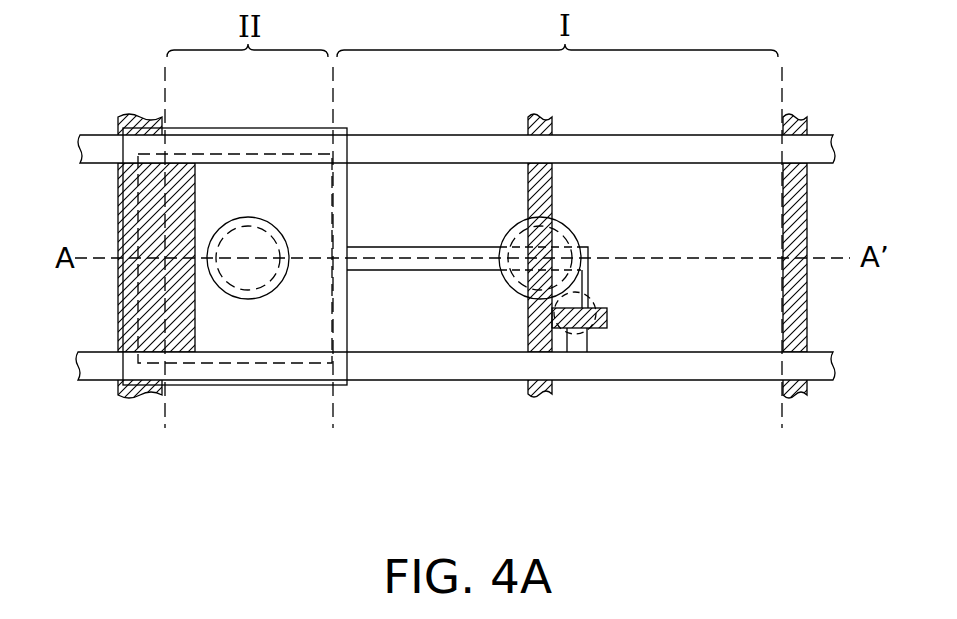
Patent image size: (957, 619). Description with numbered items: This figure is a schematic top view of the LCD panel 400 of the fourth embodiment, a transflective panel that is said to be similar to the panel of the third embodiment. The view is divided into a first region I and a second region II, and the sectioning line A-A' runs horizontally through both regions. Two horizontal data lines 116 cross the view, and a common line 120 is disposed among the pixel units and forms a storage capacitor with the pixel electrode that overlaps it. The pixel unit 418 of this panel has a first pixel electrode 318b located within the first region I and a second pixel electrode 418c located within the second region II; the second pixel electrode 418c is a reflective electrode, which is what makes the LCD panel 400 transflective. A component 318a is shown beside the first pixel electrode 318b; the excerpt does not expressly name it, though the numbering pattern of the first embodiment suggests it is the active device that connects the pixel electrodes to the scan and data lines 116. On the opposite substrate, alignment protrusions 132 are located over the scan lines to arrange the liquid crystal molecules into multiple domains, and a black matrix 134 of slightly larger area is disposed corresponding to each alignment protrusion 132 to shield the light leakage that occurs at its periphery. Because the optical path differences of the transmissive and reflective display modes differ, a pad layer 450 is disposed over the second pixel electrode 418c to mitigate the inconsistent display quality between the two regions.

The data line 116 is at (100, 367).
The common line 120 is at (118, 318).
The alignment protrusion 132 is at (240, 243).
The black matrix 134 is at (260, 216).
The first interconnect portion 318a is at (597, 347).
The first pixel electrode 318b is at (415, 343).
The second pixel electrode 418c is at (265, 345).
The interconnect structure 418 is at (652, 482).
The pad layer 450 is at (192, 390).
The LCD panel 400 is at (853, 477).